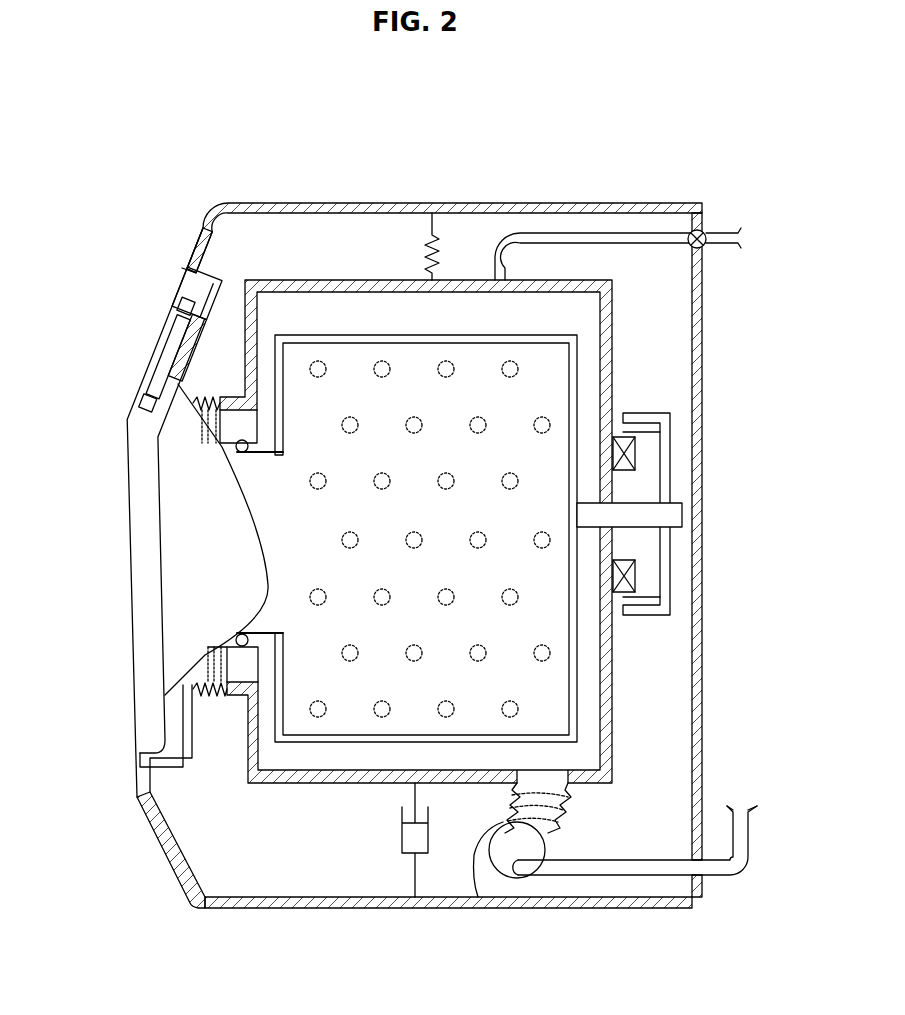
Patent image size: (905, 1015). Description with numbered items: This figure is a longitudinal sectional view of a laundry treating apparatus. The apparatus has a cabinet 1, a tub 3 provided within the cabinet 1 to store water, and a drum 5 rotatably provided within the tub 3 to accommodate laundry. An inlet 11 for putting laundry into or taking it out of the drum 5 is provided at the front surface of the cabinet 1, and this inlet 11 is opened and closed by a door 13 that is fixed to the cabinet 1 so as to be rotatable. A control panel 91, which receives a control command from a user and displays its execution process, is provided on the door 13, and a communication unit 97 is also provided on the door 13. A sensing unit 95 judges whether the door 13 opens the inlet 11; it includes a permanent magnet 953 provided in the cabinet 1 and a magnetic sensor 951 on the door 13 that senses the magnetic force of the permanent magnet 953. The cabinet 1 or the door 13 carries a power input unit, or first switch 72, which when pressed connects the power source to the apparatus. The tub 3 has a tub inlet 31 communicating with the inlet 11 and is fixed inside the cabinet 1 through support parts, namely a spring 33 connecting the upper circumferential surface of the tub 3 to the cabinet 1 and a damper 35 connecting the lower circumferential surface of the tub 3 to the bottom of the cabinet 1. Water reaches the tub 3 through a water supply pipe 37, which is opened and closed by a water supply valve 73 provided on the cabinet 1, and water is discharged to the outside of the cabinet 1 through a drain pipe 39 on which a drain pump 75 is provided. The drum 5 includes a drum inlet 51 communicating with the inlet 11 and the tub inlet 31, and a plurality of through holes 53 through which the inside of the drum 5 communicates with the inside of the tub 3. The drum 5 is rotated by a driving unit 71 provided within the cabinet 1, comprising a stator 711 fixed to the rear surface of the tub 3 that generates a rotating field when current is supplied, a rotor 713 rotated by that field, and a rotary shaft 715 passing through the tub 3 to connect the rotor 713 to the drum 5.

The cabinet 1 is at (297, 203).
The tub 3 is at (375, 280).
The drum 5 is at (353, 718).
The inlet 11 is at (204, 654).
The door 13 is at (137, 568).
The tub inlet 31 is at (238, 692).
The spring 33 is at (435, 233).
The damper 35 is at (400, 843).
The water supply pipe 37 is at (630, 243).
The drain pipe 39 is at (477, 882).
The drum inlet 51 is at (257, 470).
The through holes 53 is at (318, 716).
The driving unit 71 is at (708, 514).
The stator 711 is at (630, 453).
The rotor 713 is at (665, 577).
The rotary shaft 715 is at (678, 515).
The power input unit (first switch) 72 is at (195, 227).
The water supply valve 73 is at (704, 247).
The drain pump 75 is at (540, 848).
The control panel 91 is at (157, 358).
The sensing unit 95 is at (116, 293).
The magnetic sensor 951 is at (176, 309).
The permanent magnet 953 is at (188, 283).
The communication unit 97 is at (142, 401).